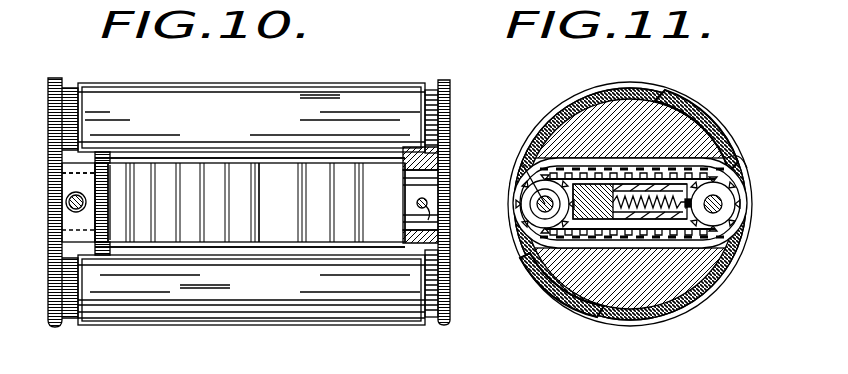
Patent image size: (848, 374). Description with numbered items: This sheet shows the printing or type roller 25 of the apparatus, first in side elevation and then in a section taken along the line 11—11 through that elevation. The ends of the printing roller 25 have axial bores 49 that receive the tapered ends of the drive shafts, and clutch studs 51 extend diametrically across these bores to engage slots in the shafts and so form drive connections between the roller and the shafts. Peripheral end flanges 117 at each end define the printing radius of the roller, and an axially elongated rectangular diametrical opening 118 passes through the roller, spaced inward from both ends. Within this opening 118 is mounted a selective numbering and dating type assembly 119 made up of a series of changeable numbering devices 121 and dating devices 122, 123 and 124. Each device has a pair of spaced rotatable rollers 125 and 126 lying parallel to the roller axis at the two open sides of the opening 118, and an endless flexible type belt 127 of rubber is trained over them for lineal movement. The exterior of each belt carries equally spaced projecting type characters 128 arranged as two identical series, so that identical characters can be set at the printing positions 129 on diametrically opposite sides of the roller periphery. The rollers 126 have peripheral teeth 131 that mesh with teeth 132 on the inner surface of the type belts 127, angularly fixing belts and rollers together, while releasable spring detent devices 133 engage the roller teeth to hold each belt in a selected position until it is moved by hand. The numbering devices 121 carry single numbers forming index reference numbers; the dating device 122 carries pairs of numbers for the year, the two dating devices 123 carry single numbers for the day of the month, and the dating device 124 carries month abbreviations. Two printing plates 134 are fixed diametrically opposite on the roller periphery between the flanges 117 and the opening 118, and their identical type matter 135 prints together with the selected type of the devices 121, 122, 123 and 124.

In FIG. 10, the section line 11 is at (222, 50).
In FIG. 10, the printing roller 25 is at (431, 88).
In FIG. 11, the printing roller 25 is at (700, 63).
In FIG. 10, the axial bore 49 is at (63, 232).
In FIG. 10, the clutch stud 51 is at (66, 218).
In FIG. 10, the peripheral end flange 117 is at (62, 80).
In FIG. 10, the diametrical opening 118 is at (95, 172).
In FIG. 11, the diametrical opening 118 is at (745, 131).
In FIG. 10, the selective numbering and dating type assembly 119 is at (110, 190).
In FIG. 11, the selective numbering and dating type assembly 119 is at (520, 162).
In FIG. 10, the numbering device 121 is at (127, 160).
In FIG. 11, the numbering device 121 is at (745, 187).
In FIG. 10, the dating device 122 is at (287, 242).
In FIG. 10, the dating device 123 is at (350, 136).
In FIG. 10, the dating device 124 is at (373, 163).
In FIG. 11, the rotatable roller 125 is at (528, 200).
In FIG. 11, the rotatable roller 126 is at (740, 173).
In FIG. 10, the endless flexible type belt 127 is at (363, 163).
In FIG. 11, the endless flexible type belt 127 is at (723, 230).
In FIG. 10, the type characters 128 is at (117, 248).
In FIG. 11, the type characters 128 is at (758, 151).
In FIG. 11, the printing positions 129 is at (515, 205).
In FIG. 11, the roller teeth 131 is at (740, 218).
In FIG. 11, the belt teeth 132 is at (532, 250).
In FIG. 11, the releasable spring detent device 133 is at (690, 205).
In FIG. 10, the printing plate 134 is at (347, 85).
In FIG. 11, the printing plate 134 is at (593, 90).
In FIG. 10, the type matter 135 is at (313, 90).